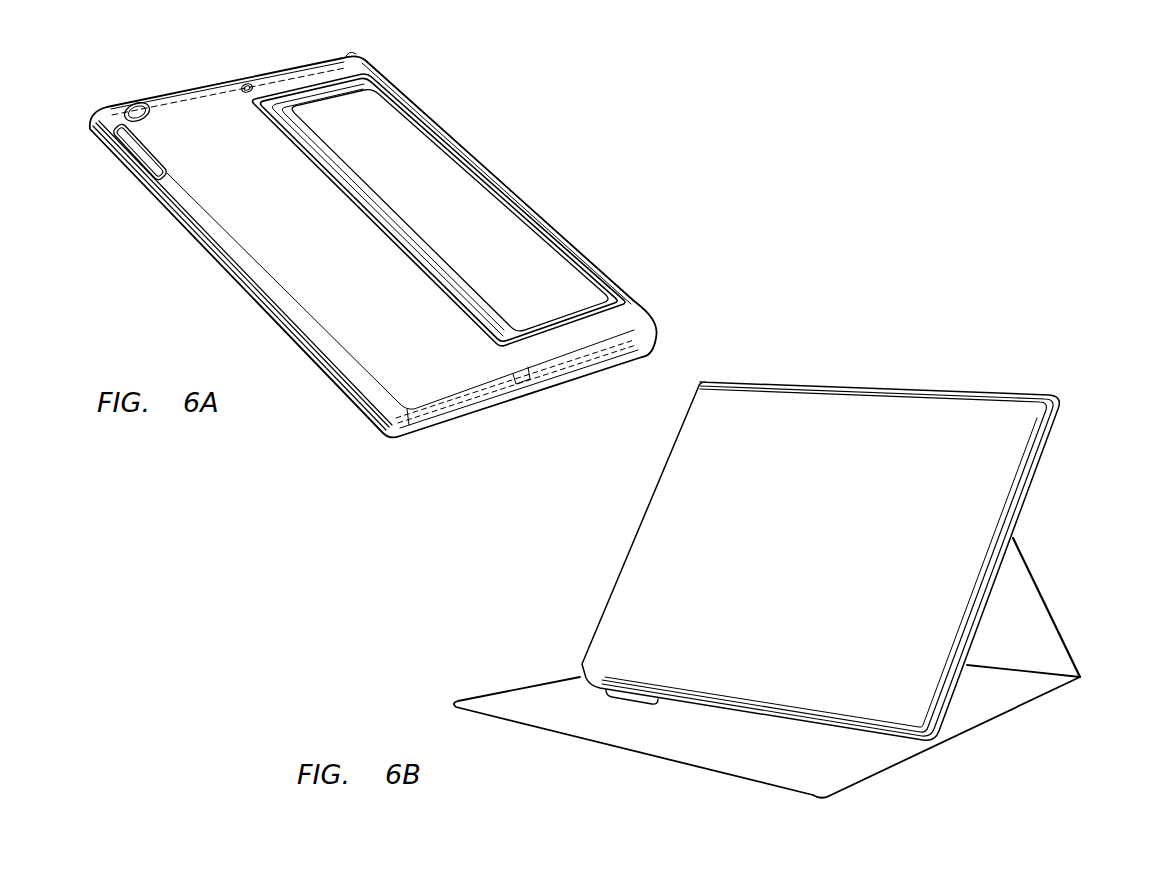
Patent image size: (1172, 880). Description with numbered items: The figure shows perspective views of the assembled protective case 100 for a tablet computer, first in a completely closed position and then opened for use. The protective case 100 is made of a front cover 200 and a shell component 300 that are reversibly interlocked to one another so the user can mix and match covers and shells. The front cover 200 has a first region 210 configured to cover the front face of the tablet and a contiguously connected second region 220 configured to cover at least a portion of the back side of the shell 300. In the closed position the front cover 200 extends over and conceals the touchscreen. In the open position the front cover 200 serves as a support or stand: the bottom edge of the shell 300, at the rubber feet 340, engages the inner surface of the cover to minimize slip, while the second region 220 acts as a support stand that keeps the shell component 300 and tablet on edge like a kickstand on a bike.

In FIG. 6A, the protective case 100 is at (480, 131).
In FIG. 6A, the front cover 200 is at (534, 202).
In FIG. 6B, the front cover 200 is at (797, 666).
In FIG. 6A, the first region 210 is at (450, 417).
In FIG. 6B, the first region 210 is at (1053, 622).
In FIG. 6B, the second region 220 is at (1030, 707).
In FIG. 6A, the shell component 300 is at (277, 240).
In FIG. 6B, the shell component 300 is at (1046, 445).
In FIG. 6B, the rubber feet 340 is at (630, 692).